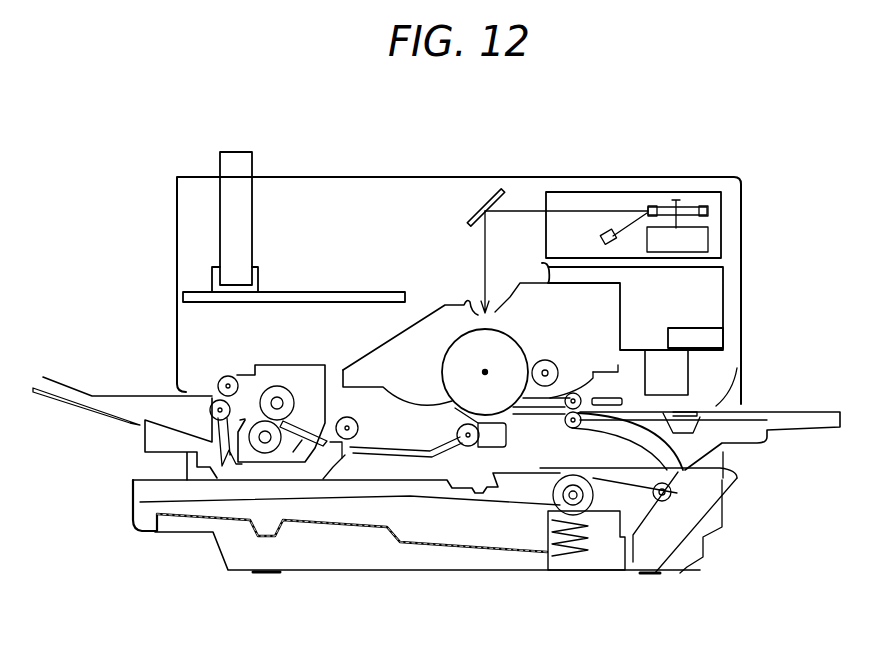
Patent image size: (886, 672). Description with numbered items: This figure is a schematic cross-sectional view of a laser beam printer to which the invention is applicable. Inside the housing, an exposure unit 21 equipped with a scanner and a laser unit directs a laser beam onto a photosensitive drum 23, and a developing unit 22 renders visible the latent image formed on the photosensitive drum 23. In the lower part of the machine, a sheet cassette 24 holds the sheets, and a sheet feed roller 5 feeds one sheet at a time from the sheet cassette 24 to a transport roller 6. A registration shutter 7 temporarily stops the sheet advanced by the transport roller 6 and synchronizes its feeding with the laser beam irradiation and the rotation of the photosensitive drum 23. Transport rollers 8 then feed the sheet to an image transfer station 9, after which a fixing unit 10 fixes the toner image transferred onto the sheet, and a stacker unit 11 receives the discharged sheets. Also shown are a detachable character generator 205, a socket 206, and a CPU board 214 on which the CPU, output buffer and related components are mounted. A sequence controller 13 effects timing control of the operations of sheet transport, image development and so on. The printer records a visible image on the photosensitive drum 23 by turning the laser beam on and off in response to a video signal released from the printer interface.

The detachable character generator 205 is at (241, 158).
The socket 206 is at (255, 284).
The CPU board 214 is at (333, 297).
The exposure unit 21 is at (723, 213).
The developing unit 22 is at (607, 318).
The sequence controller 13 is at (713, 342).
The photosensitive drum 23 is at (460, 333).
The stacker unit 11 is at (128, 412).
The fixing unit 10 is at (285, 365).
The image transfer station 9 is at (493, 437).
The transport rollers 8 is at (567, 428).
The registration shutter 7 is at (590, 417).
The sheet cassette 24 is at (130, 497).
The sheet feed roller 5 is at (553, 500).
The transport roller 6 is at (660, 503).